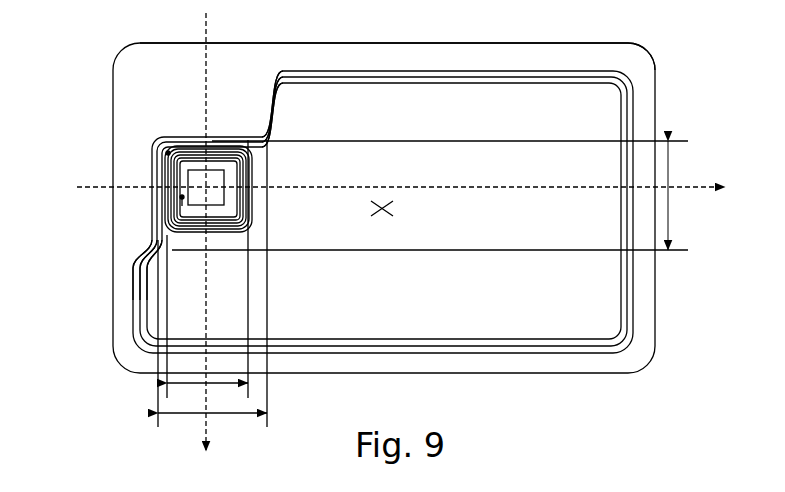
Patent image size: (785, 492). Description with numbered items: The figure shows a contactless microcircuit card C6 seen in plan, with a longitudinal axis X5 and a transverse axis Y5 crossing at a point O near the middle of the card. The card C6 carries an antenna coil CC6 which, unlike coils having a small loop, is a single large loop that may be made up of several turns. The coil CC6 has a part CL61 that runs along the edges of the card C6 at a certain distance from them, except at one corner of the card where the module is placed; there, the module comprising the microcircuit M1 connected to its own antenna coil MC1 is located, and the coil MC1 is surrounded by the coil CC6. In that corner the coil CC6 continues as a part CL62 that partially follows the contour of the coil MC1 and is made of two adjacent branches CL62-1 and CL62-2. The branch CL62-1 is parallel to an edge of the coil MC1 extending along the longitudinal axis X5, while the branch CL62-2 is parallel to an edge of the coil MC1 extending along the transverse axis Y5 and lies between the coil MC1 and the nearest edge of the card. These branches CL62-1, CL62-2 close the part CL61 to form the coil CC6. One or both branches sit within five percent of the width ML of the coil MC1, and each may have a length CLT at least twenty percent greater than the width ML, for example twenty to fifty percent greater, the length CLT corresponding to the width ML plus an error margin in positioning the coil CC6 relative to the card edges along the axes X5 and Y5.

The contactless microcircuit card C6 is at (113, 67).
The antenna coil CC6 is at (628, 58).
The part of the antenna coil following the card edge CL61 is at (500, 76).
The part of the antenna coil following the module coil contour CL62 is at (171, 128).
The branch CL62-1 is at (212, 138).
The branch CL62-2 is at (157, 204).
The antenna coil of the module MC1 is at (168, 153).
The microcircuit M1 is at (188, 192).
The card center origin O is at (382, 220).
The longitudinal axis X5 is at (418, 190).
The transverse axis Y5 is at (204, 246).
The length of the branch CLT is at (437, 290).
The width of the coil MC1 ML is at (207, 275).